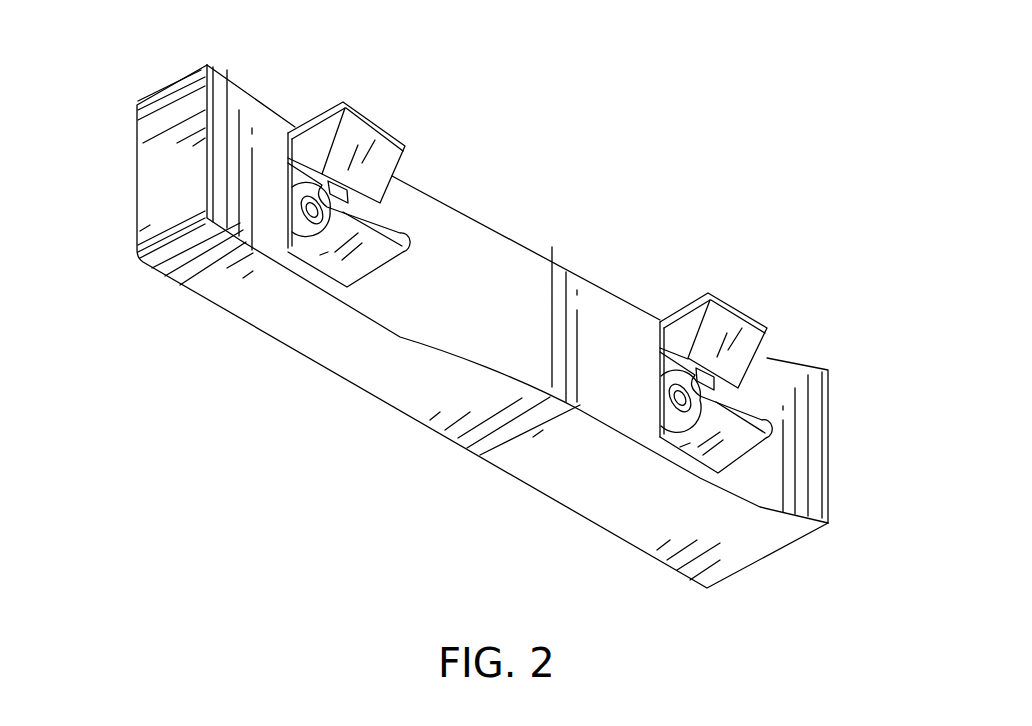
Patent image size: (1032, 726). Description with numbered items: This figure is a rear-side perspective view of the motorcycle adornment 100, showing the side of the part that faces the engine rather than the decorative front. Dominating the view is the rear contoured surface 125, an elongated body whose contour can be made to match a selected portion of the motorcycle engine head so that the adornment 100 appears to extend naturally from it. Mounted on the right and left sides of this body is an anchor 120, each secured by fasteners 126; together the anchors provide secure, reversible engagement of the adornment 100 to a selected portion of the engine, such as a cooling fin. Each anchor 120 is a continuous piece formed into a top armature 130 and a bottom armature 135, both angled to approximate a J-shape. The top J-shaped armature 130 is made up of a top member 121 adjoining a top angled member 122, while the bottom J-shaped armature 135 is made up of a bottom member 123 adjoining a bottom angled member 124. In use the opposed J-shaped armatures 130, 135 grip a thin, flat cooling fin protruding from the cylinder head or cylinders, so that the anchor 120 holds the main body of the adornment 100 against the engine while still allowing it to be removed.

The adornment 100 is at (138, 344).
The anchor 120 is at (400, 125).
The top member 121 is at (327, 108).
The top angled member 122 is at (396, 168).
The bottom member 123 is at (322, 252).
The bottom angled member 124 is at (350, 203).
The rear contoured surface 125 is at (505, 262).
The fastener 126 is at (663, 373).
The top armature 130 is at (770, 348).
The bottom armature 135 is at (753, 462).